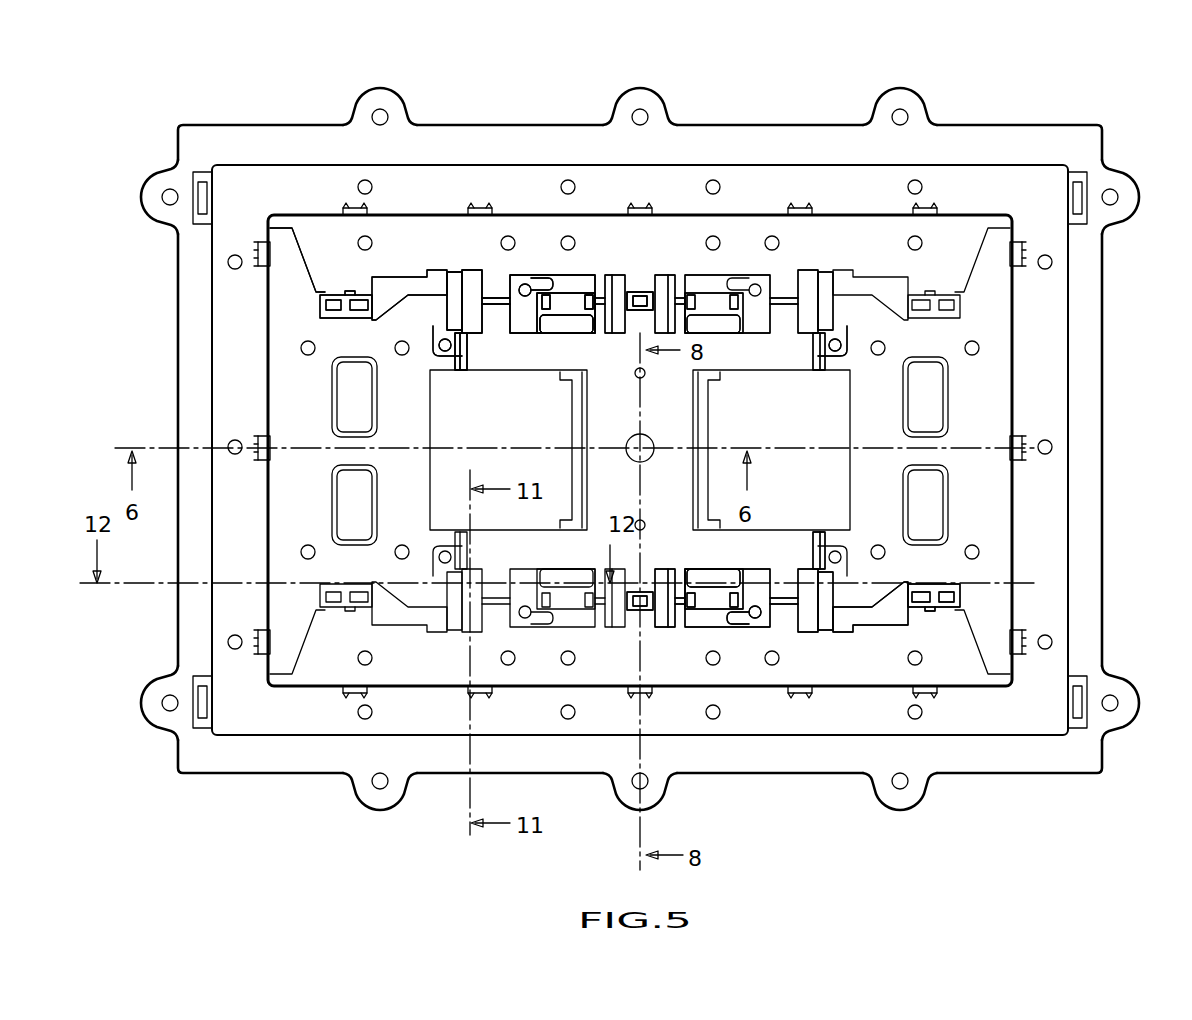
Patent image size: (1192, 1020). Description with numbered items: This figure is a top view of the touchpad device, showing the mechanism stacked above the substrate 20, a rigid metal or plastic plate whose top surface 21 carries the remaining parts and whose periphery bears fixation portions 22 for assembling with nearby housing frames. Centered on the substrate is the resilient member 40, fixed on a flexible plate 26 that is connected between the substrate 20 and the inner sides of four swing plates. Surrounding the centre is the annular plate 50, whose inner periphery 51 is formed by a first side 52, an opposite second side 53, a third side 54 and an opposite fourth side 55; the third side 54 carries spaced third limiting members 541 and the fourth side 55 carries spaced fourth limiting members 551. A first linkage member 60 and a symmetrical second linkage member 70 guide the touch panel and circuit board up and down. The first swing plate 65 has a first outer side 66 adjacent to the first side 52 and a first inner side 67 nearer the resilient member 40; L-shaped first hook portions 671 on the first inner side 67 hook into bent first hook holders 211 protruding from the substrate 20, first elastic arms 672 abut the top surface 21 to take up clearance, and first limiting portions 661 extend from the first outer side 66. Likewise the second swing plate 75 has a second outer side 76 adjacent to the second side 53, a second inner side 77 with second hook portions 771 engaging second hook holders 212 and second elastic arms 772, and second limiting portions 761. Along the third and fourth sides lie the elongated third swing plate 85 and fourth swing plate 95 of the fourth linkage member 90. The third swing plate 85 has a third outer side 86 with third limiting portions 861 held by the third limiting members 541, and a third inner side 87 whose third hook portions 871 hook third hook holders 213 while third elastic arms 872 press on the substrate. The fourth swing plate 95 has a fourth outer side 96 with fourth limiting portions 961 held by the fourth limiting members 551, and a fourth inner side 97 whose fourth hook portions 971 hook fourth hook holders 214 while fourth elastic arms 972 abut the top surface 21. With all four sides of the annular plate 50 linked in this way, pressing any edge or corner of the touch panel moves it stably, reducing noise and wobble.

The substrate 20 is at (213, 124).
The top surface 21 is at (270, 133).
The fixation portion 22 is at (375, 98).
The first hook holder 211 is at (460, 270).
The second hook holder 212 is at (822, 630).
The third hook holder 213 is at (950, 592).
The fourth hook holder 214 is at (628, 292).
The flexible plate 26 is at (670, 320).
The resilient member 40 is at (655, 447).
The annular plate 50 is at (843, 172).
The inner periphery 51 is at (965, 75).
The first side 52 is at (270, 676).
The second side 53 is at (1015, 243).
The third side 54 is at (305, 688).
The third limiting member 541 is at (355, 694).
The fourth side 55 is at (978, 232).
The fourth limiting member 551 is at (798, 210).
The first linkage member 60 is at (268, 222).
The first swing plate 65 is at (285, 312).
The first outer side 66 is at (320, 300).
The first limiting portion 661 is at (260, 445).
The first inner side 67 is at (430, 410).
The first hook portion 671 is at (447, 296).
The first elastic arm 672 is at (440, 348).
The second linkage member 70 is at (955, 666).
The second swing plate 75 is at (985, 576).
The second outer side 76 is at (1005, 560).
The second limiting portion 761 is at (1020, 446).
The second inner side 77 is at (850, 410).
The second hook portion 771 is at (833, 296).
The second elastic arm 772 is at (840, 348).
The third swing plate 85 is at (955, 668).
The third outer side 86 is at (835, 622).
The third limiting portion 861 is at (930, 694).
The third inner side 87 is at (677, 630).
The third hook portion 871 is at (717, 614).
The third elastic arm 872 is at (757, 620).
The fourth linkage member 90 is at (303, 233).
The fourth swing plate 95 is at (430, 232).
The fourth outer side 96 is at (740, 272).
The fourth limiting portion 961 is at (640, 275).
The fourth inner side 97 is at (600, 275).
The fourth hook portion 971 is at (553, 276).
The fourth elastic arm 972 is at (523, 284).